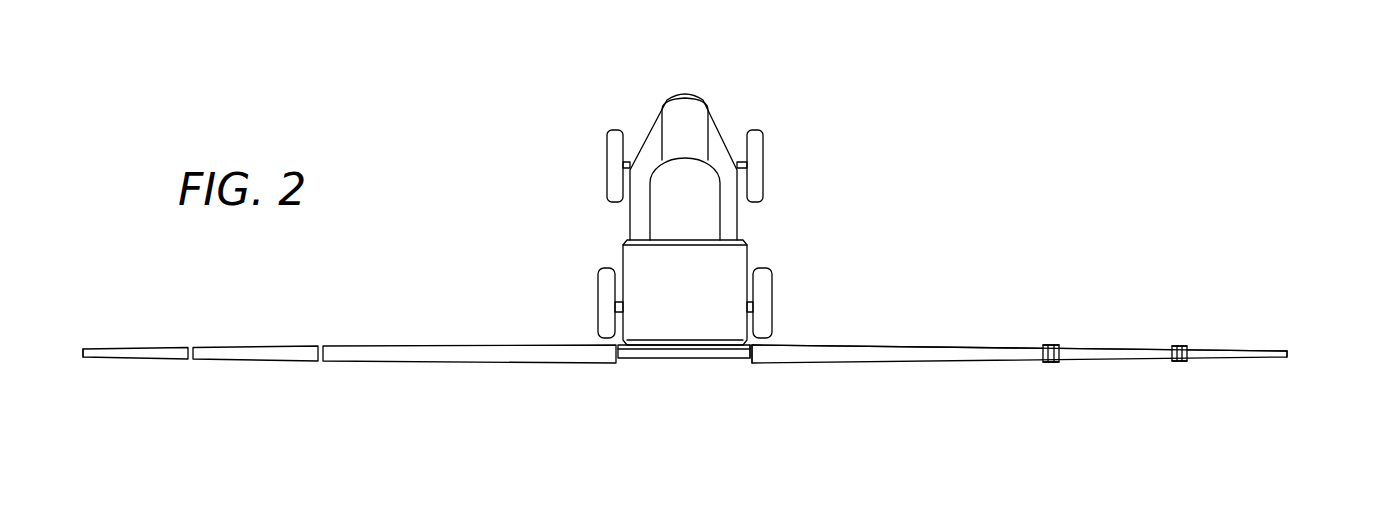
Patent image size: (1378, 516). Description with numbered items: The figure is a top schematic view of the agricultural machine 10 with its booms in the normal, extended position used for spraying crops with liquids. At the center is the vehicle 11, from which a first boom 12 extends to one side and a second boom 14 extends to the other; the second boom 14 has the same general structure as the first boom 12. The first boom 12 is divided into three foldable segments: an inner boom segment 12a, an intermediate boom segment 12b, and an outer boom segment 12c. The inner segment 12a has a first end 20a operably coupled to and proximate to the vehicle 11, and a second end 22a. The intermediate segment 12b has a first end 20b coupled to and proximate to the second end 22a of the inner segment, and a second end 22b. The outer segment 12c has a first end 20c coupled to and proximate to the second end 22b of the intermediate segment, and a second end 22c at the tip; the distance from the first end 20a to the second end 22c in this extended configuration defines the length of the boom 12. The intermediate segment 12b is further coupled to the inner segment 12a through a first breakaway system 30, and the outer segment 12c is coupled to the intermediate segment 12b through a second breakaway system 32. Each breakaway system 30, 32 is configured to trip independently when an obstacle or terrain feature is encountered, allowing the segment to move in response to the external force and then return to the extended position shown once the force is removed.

The agricultural machine 10 is at (941, 117).
The vehicle 11 is at (688, 92).
The first boom 12 is at (980, 429).
The inner boom segment 12a is at (918, 345).
The intermediate boom segment 12b is at (1113, 346).
The outer boom segment 12c is at (1235, 347).
The second boom 14 is at (411, 280).
The first end of inner segment 20a is at (754, 394).
The first end of intermediate segment 20b is at (1063, 379).
The first end of outer segment 20c is at (1194, 379).
The second end of inner segment 22a is at (1042, 325).
The second end of intermediate segment 22b is at (1173, 325).
The second end of outer segment 22c is at (1289, 328).
The first breakaway system 30 is at (1050, 362).
The second breakaway system 32 is at (1178, 362).